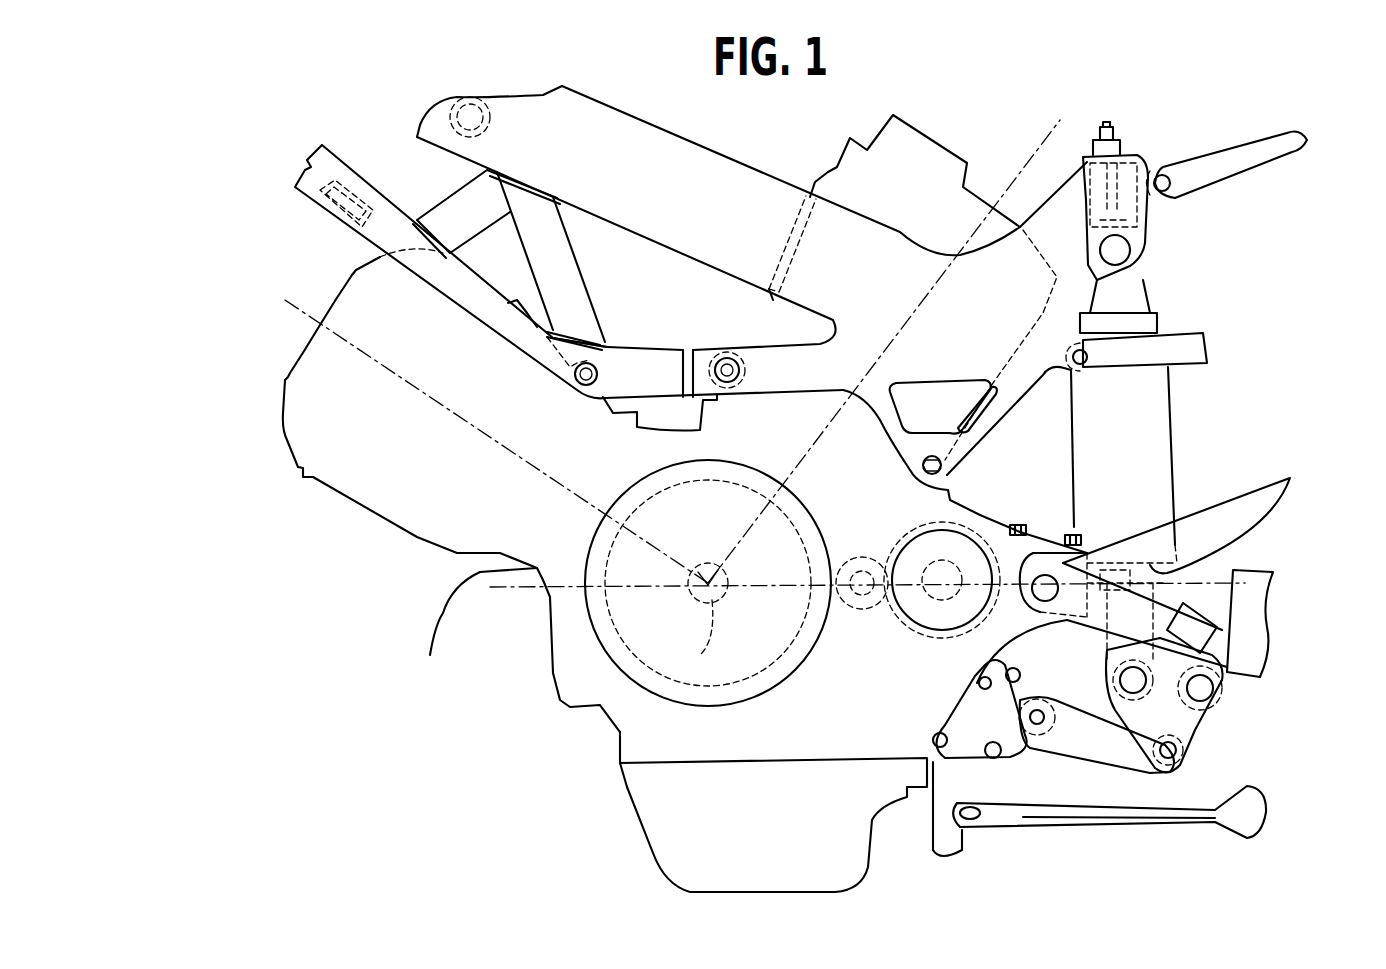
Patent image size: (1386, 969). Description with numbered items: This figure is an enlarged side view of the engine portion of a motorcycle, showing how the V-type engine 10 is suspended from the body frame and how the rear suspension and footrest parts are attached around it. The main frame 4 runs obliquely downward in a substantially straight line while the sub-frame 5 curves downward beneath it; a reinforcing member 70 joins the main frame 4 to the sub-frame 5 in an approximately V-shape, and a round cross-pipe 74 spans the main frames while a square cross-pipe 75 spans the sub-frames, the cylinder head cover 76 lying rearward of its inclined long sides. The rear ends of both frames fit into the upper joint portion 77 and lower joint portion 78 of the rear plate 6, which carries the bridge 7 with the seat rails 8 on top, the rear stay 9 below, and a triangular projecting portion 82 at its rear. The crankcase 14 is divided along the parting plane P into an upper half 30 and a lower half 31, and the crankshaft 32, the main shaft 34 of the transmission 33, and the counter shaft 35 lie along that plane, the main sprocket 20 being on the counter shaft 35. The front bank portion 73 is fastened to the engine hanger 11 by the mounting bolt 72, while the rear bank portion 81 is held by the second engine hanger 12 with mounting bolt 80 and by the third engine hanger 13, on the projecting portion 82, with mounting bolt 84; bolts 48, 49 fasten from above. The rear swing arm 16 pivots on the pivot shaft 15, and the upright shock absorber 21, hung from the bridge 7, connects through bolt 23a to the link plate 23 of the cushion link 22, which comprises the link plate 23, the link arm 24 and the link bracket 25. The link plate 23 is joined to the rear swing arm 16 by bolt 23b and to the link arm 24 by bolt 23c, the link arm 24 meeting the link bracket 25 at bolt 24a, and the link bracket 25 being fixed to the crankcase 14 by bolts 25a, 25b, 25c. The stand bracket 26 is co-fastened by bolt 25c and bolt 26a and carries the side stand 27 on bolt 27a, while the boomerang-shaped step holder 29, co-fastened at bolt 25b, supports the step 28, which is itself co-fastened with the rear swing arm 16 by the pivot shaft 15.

The main frame 4 is at (700, 143).
The sub-frame 5 is at (378, 197).
The rear plate 6 is at (905, 245).
The bridge 7 is at (1150, 160).
The seat rails 8 is at (1285, 150).
The rear stay 9 is at (1200, 345).
The V-type engine 10 is at (400, 570).
The engine hanger 11 is at (588, 345).
The second engine hanger 12 is at (722, 352).
The third engine hanger 13 is at (968, 472).
The crankcase 14 is at (618, 730).
The pivot shaft 15 is at (1045, 575).
The rear swing arm 16 is at (1270, 617).
The main sprocket 20 is at (898, 628).
The shock absorber 21 is at (1172, 425).
The cushion link 22 is at (1270, 740).
The link plate 23 is at (1205, 730).
The bolt 23a is at (1123, 668).
The bolt 23b is at (1212, 698).
The bolt 23c is at (1172, 760).
The link arm 24 is at (1100, 745).
The bolt 24a is at (1045, 715).
The link bracket 25 is at (1010, 745).
The bolt 25a is at (1020, 678).
The bolt 25b is at (980, 690).
The bolt 25c is at (933, 741).
The stand bracket 26 is at (935, 835).
The bolt 26a is at (1000, 760).
The side stand 27 is at (1103, 825).
The bolt 27a is at (975, 820).
The step 28 is at (1240, 590).
The step holder 29 is at (1122, 587).
The upper half 30 is at (507, 650).
The lower half 31 is at (553, 673).
The crankshaft 32 is at (702, 625).
The transmission 33 is at (865, 540).
The main shaft 34 is at (867, 612).
The counter shaft 35 is at (940, 625).
The bolt 48 is at (1018, 522).
The bolt 49 is at (1077, 530).
The reinforcing member 70 is at (570, 262).
The mounting bolt 72 is at (580, 388).
The front bank portion 73 is at (620, 390).
The cross-pipe 74 is at (472, 140).
The cross-pipe 75 is at (340, 225).
The cylinder head cover 76 is at (287, 405).
The upper joint portion 77 is at (830, 210).
The lower joint portion 78 is at (786, 333).
The mounting bolt 80 is at (720, 415).
The rear bank portion 81 is at (815, 400).
The projecting portion 82 is at (1010, 425).
The mounting bolt 84 is at (923, 470).
The parting plane P is at (547, 625).